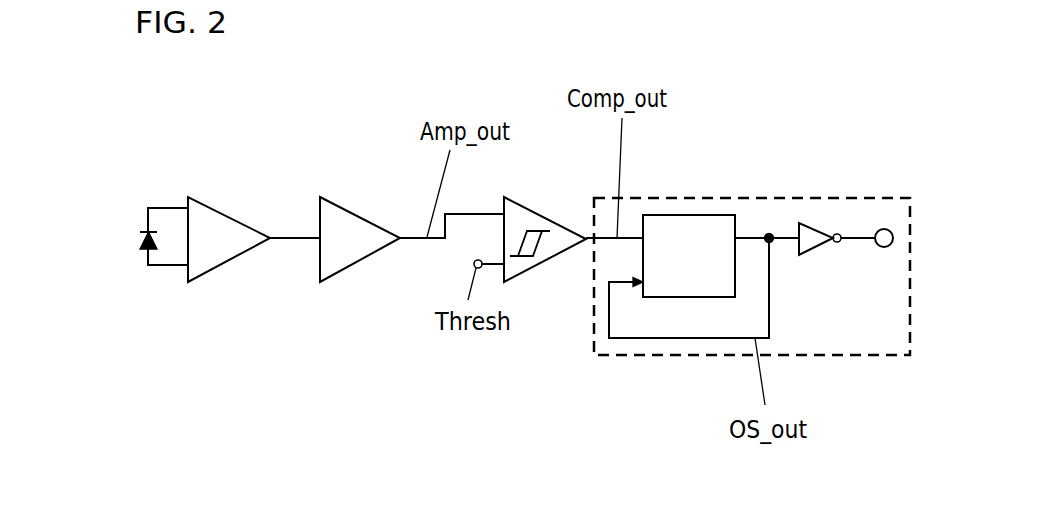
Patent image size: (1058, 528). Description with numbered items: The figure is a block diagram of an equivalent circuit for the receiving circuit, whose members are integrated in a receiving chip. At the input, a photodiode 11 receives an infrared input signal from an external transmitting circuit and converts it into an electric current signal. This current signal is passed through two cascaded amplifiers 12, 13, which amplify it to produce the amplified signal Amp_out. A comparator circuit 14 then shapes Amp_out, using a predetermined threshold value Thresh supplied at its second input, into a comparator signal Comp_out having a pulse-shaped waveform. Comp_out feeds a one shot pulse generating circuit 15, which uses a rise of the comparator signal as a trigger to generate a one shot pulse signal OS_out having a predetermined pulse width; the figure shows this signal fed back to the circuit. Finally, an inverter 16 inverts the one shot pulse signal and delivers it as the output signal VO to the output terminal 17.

The photodiode 11 is at (147, 231).
The amplifier 12 is at (209, 203).
The amplifier 13 is at (352, 211).
The comparator circuit 14 is at (533, 212).
The one shot pulse generating circuit 15 is at (697, 215).
The inverter 16 is at (815, 222).
The output terminal 17 is at (882, 228).